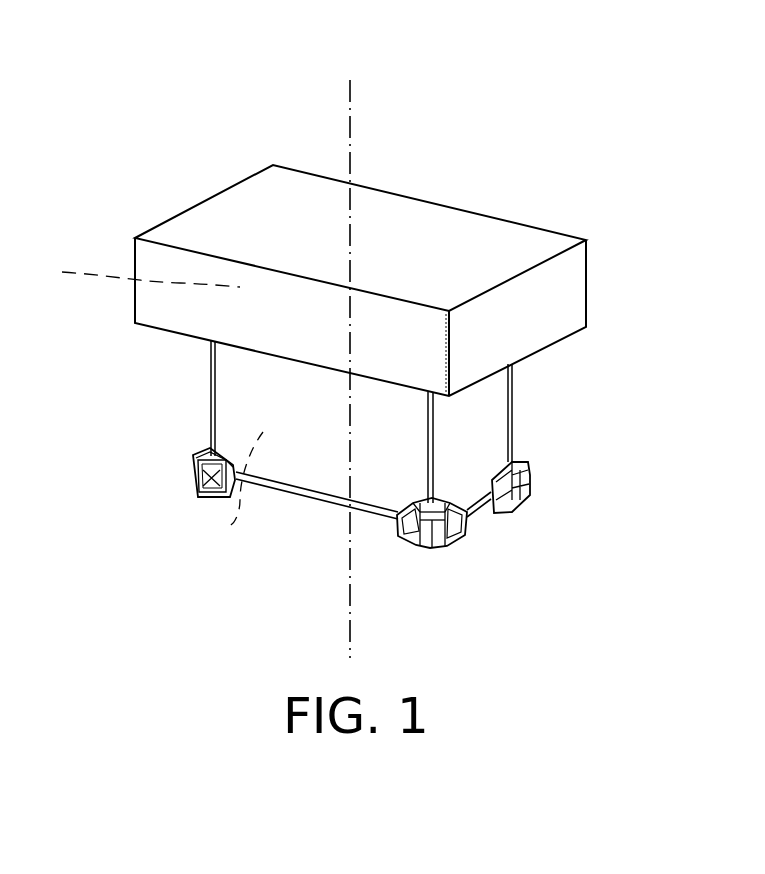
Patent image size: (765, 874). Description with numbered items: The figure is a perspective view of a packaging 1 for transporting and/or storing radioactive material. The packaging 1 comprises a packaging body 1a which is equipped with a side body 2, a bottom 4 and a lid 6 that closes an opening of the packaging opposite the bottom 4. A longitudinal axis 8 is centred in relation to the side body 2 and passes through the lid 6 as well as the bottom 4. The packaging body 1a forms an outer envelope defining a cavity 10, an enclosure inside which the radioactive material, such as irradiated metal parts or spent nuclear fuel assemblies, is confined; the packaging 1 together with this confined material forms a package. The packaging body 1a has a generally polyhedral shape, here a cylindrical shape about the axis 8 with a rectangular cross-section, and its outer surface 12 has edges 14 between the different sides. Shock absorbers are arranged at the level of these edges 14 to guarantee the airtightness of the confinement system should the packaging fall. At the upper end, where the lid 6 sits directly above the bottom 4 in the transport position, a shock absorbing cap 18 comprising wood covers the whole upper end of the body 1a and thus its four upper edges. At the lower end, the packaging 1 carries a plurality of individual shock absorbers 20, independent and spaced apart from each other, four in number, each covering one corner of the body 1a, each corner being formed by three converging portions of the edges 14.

The packaging 1 is at (451, 84).
The packaging body 1a is at (224, 393).
The side body 2 is at (292, 470).
The bottom 4 is at (370, 510).
The lid 6 is at (142, 272).
The longitudinal axis 8 is at (350, 95).
The cavity 10 is at (230, 525).
The outer surface 12 is at (468, 470).
The edges 14 is at (211, 348).
The shock absorbing cap 18 is at (573, 268).
The individual shock absorbers 20 is at (193, 480).